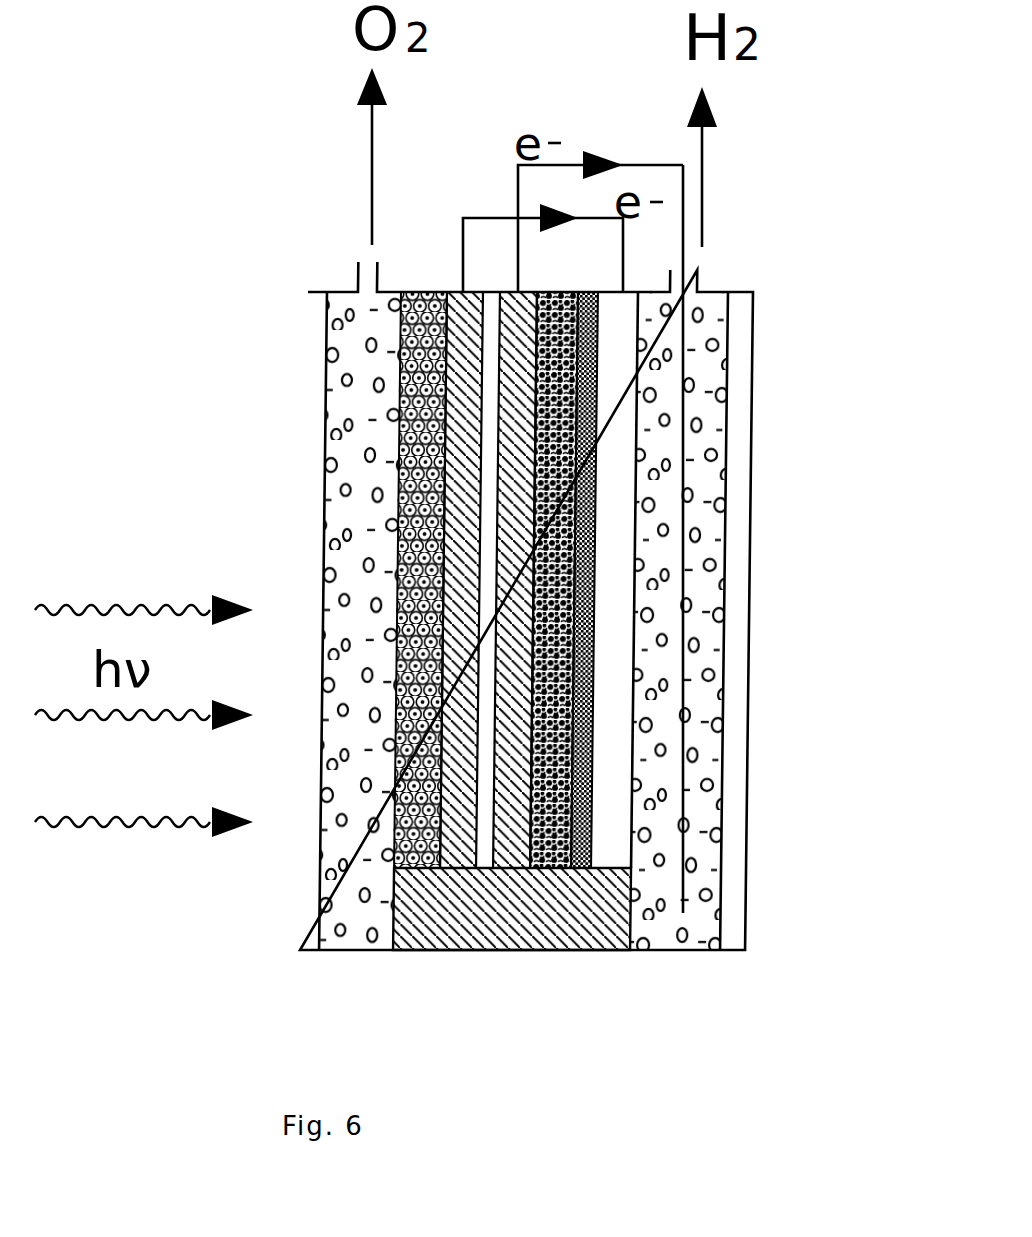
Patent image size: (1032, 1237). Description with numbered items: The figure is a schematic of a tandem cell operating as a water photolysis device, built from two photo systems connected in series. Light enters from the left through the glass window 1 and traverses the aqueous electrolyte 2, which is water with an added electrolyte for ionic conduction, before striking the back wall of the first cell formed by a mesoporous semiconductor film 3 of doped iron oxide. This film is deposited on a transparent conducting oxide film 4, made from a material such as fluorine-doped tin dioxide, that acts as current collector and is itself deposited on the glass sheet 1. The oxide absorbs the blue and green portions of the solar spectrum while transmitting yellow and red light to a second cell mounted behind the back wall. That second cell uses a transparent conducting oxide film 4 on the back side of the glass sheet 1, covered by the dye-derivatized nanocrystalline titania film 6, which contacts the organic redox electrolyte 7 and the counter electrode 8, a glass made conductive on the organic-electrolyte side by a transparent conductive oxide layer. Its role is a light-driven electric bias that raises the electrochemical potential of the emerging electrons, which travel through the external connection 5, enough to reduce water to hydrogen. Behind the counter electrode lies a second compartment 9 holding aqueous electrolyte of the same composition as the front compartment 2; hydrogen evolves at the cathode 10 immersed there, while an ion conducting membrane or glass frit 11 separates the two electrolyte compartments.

The glass window 1 is at (312, 297).
The electrolyte 2 is at (362, 398).
The mesoporous semiconductor film 3 is at (412, 453).
The transparent conducting oxide film 4 is at (468, 502).
The external electrical connection 5 is at (683, 218).
The dye-derivatized nanocrystalline titania film 6 is at (580, 408).
The organic redox electrolyte 7 is at (597, 507).
The counter electrode 8 is at (618, 610).
The second compartment 9 is at (707, 707).
The cathode 10 is at (683, 803).
The ion conducting membrane or glass frit 11 is at (583, 902).